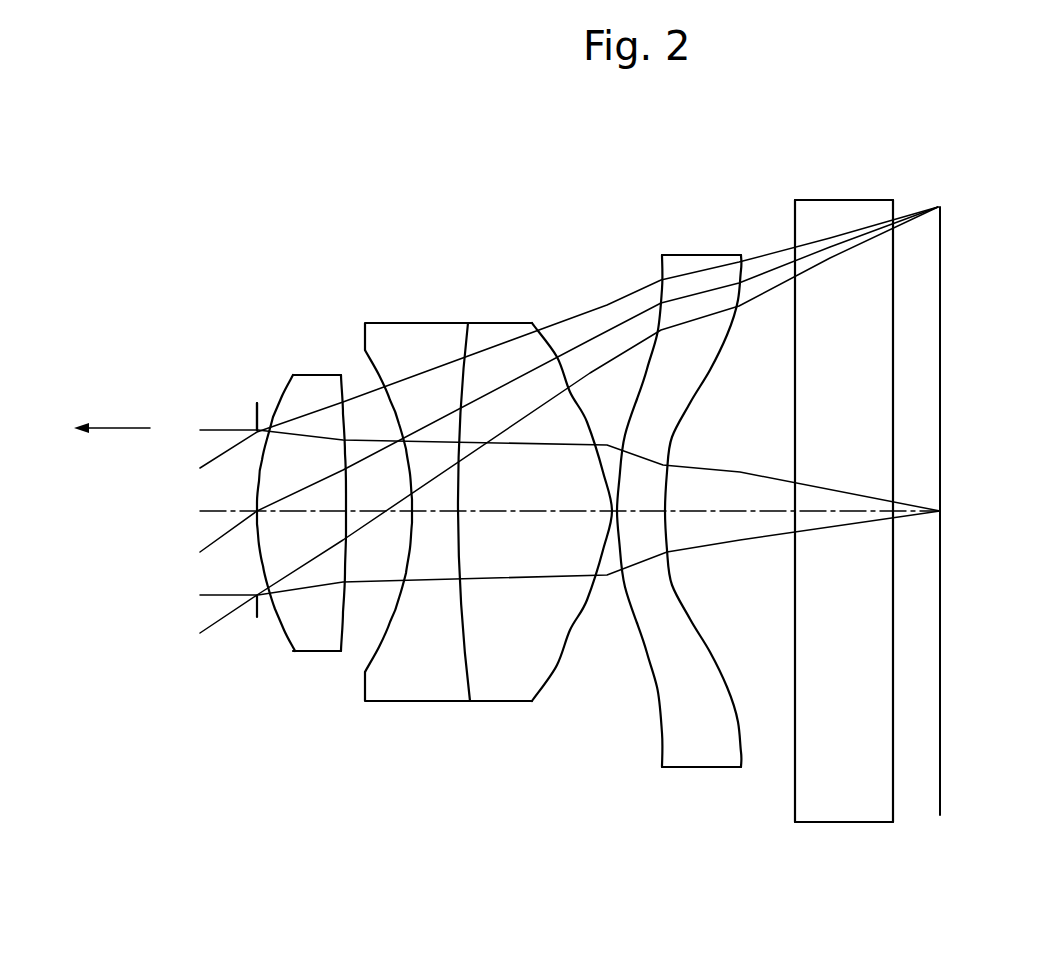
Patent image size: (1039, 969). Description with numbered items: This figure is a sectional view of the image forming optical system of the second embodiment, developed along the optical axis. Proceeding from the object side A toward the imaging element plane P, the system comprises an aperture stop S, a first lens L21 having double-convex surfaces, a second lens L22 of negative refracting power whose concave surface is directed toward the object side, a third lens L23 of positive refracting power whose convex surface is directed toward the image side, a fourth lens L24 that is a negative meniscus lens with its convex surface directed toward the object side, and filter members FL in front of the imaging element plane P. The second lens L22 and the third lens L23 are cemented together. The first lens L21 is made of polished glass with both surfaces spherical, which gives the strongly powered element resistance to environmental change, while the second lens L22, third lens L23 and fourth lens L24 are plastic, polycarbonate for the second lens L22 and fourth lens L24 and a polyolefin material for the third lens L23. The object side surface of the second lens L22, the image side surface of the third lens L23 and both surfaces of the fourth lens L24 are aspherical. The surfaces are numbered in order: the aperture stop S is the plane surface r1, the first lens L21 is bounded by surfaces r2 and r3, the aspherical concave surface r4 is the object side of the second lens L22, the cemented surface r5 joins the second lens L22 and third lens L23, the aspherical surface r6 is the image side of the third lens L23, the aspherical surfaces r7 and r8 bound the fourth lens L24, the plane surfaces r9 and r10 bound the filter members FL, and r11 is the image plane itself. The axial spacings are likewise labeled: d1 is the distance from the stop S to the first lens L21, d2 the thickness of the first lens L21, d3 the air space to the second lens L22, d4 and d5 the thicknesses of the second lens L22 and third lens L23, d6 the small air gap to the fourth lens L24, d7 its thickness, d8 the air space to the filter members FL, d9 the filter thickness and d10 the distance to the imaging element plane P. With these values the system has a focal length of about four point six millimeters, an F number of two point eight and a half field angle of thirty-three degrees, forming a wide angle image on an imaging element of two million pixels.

The object side A is at (112, 406).
The aperture stop S is at (258, 616).
The first lens L21 is at (303, 553).
The second lens L22 is at (407, 548).
The third lens L23 is at (540, 549).
The fourth lens L24 is at (685, 509).
The filter members FL is at (843, 523).
The imaging element plane P is at (970, 504).
The radius of curvature of first surface r1 is at (255, 406).
The radius of curvature of second surface r2 is at (292, 380).
The radius of curvature of third surface r3 is at (344, 391).
The radius of curvature of fourth surface r4 is at (364, 357).
The radius of curvature of fifth surface r5 is at (460, 347).
The radius of curvature of sixth surface r6 is at (548, 343).
The radius of curvature of seventh surface r7 is at (641, 380).
The radius of curvature of eighth surface r8 is at (727, 348).
The radius of curvature of ninth surface r9 is at (794, 220).
The radius of curvature of tenth surface r10 is at (893, 213).
The radius of curvature of eleventh surface r11 is at (939, 222).
The air space between aperture stop and first lens d1 is at (238, 595).
The thickness of first lens d2 is at (316, 513).
The air space between first and second lenses d3 is at (383, 513).
The thickness of second lens d4 is at (442, 513).
The thickness of third lens d5 is at (543, 513).
The air space between third and fourth lenses d6 is at (610, 513).
The thickness of fourth lens d7 is at (637, 513).
The air space between fourth lens and filter members d8 is at (740, 513).
The thickness of filter members d9 is at (848, 513).
The air space between filter members and image plane d10 is at (920, 513).